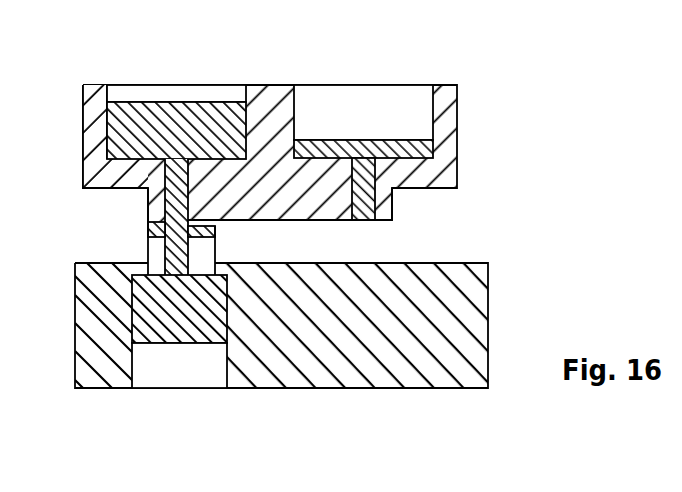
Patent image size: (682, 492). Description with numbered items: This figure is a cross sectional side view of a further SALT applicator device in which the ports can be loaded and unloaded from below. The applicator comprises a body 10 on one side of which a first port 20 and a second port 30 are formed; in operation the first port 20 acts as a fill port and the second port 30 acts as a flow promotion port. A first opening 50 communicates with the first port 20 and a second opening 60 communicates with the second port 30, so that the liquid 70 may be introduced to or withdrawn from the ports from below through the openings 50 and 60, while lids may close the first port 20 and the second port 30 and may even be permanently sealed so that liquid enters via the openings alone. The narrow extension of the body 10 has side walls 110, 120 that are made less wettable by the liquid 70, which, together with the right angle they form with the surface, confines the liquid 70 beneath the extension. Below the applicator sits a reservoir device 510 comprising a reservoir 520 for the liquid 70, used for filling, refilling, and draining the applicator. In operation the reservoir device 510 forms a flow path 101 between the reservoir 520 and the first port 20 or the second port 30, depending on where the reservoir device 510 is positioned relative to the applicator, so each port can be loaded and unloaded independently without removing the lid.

The body 10 is at (265, 94).
The first port 20 is at (172, 91).
The second port 30 is at (377, 92).
The first opening 50 is at (168, 200).
The second opening 60 is at (370, 167).
The liquid 70 is at (108, 135).
The flow path 101 is at (218, 229).
The side wall 110 is at (150, 226).
The side wall 120 is at (392, 210).
The reservoir device 510 is at (372, 389).
The reservoir 520 is at (174, 345).